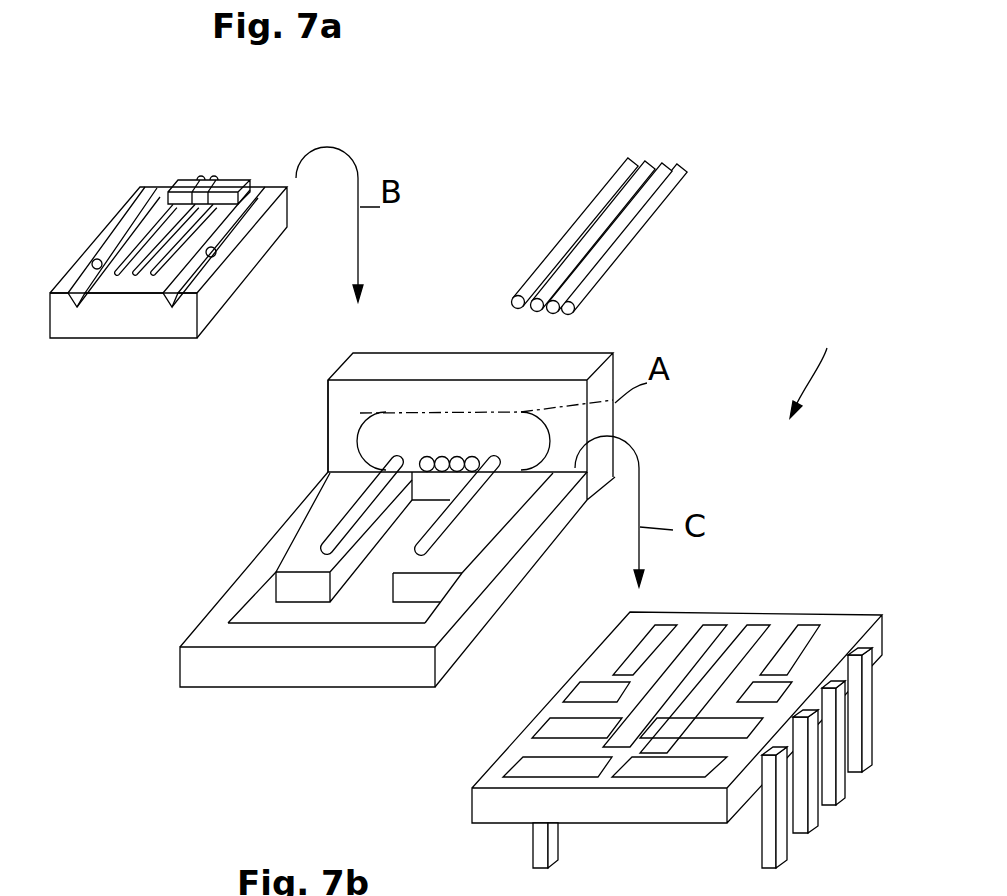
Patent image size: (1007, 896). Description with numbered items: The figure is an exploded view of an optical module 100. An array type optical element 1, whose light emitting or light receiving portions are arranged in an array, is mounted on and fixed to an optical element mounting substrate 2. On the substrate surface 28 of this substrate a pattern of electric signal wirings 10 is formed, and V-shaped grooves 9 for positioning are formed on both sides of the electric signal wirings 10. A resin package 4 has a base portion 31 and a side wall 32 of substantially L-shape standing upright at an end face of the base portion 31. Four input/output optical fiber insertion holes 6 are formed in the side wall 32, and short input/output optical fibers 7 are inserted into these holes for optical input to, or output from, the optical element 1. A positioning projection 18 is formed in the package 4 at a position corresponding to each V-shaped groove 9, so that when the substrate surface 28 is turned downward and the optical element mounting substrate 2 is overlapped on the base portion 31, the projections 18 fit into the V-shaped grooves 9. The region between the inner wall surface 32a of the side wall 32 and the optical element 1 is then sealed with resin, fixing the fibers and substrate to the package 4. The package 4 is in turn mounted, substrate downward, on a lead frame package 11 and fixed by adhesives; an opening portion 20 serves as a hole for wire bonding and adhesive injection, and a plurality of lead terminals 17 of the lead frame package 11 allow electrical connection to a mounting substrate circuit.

The array type optical element 1 is at (203, 176).
The optical element mounting substrate 2 is at (71, 327).
The package 4 is at (213, 620).
The input/output optical fiber insertion hole 6 is at (423, 456).
The input/output optical fibers 7 is at (563, 238).
The V-shaped grooves 9 is at (98, 258).
The electric signal wirings 10 is at (145, 228).
The lead frame package 11 is at (680, 810).
The lead terminals 17 is at (533, 845).
The positioning projection 18 is at (362, 505).
The opening portion 20 is at (378, 584).
The substrate surface 28 is at (140, 288).
The base portion 31 is at (470, 628).
The side wall 32 is at (604, 420).
The inner wall surface 32a is at (342, 426).
The optical module 100 is at (836, 366).